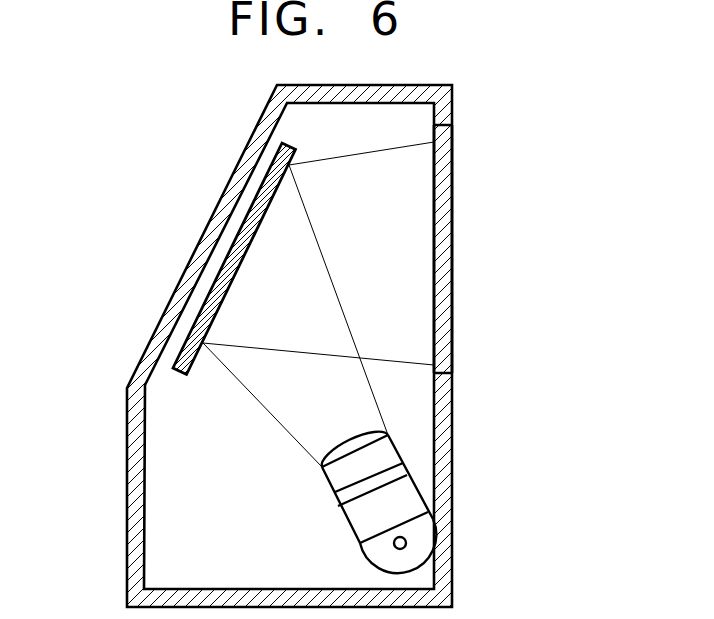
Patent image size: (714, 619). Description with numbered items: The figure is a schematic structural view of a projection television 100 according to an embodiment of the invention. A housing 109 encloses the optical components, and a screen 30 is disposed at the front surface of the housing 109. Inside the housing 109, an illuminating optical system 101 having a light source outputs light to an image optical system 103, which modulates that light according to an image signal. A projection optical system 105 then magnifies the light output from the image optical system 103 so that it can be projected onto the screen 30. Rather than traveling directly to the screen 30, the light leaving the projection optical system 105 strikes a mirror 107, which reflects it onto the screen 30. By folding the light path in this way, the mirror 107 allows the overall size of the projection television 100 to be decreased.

The projection television 100 is at (140, 190).
The screen 30 is at (452, 240).
The illuminating optical system 101 is at (433, 527).
The image optical system 103 is at (338, 504).
The projection optical system 105 is at (322, 466).
The mirror 107 is at (247, 215).
The housing 109 is at (135, 560).